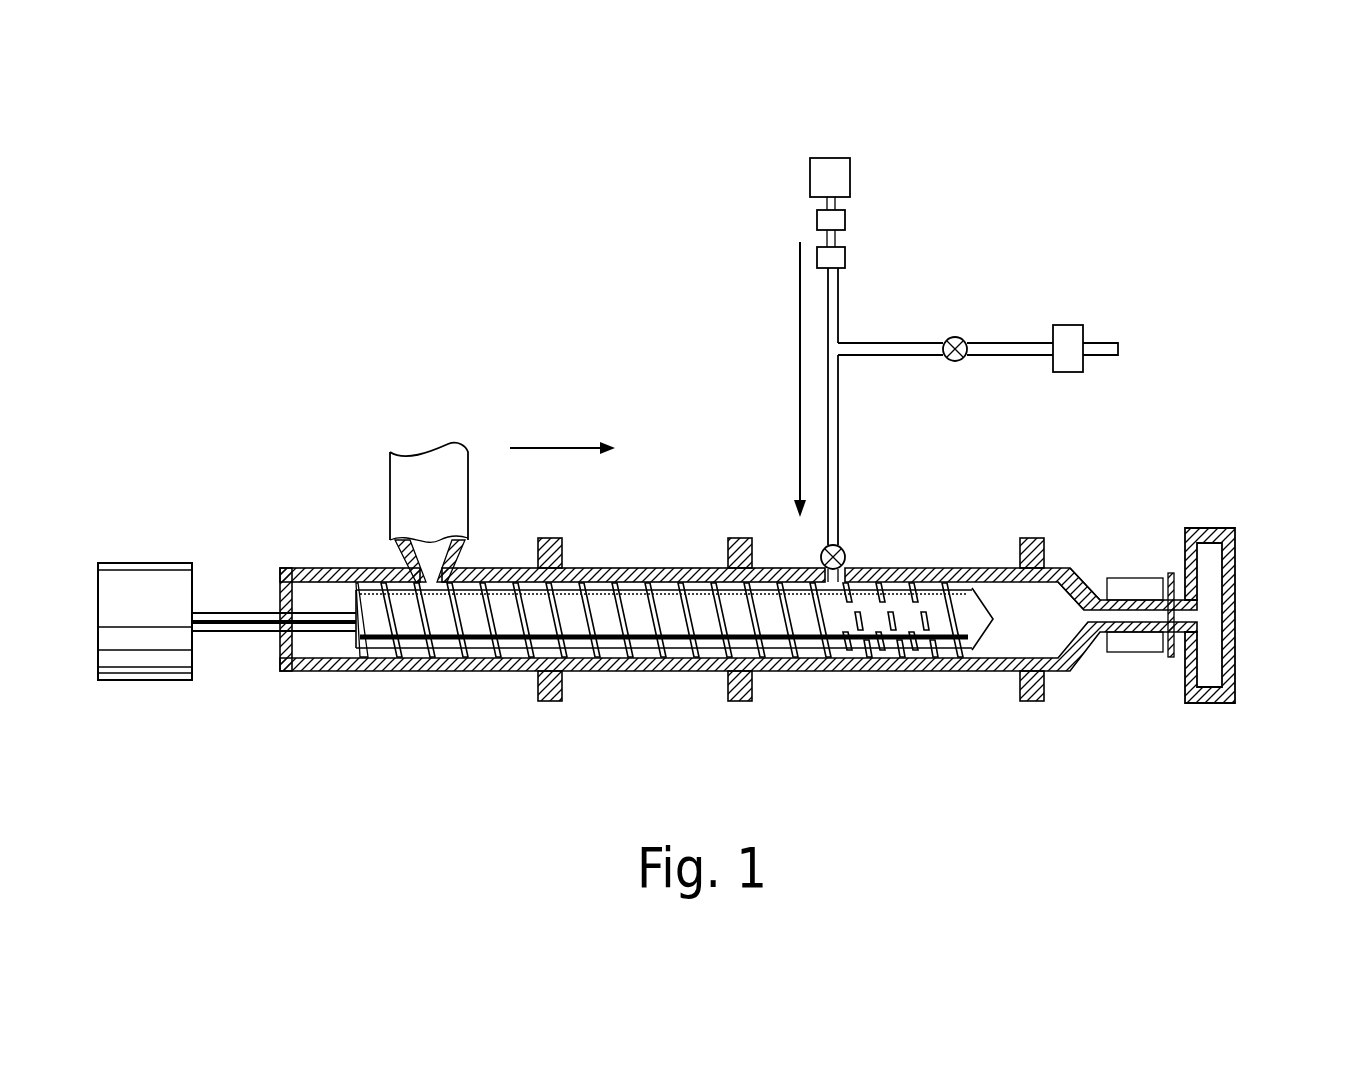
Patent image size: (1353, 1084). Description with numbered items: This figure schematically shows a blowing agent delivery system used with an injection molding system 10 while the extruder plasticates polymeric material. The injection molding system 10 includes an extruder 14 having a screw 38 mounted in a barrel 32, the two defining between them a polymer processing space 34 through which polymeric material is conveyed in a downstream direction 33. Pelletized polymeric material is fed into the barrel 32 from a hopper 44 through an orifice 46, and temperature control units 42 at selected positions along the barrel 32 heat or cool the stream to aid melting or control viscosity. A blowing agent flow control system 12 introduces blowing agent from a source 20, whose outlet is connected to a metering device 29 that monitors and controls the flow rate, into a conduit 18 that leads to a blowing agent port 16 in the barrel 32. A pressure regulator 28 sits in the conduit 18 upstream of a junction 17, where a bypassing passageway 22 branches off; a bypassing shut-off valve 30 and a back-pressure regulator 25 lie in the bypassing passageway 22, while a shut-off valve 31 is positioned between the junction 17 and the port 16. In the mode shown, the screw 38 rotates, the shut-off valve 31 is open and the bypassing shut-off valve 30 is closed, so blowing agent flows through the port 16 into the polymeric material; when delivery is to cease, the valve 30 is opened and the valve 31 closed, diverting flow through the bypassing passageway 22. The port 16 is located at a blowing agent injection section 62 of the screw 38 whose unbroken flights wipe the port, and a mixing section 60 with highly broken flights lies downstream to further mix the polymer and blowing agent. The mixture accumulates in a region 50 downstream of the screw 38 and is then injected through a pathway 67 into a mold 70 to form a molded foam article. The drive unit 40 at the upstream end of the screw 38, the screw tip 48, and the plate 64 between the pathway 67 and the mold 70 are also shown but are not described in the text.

The injection molding system 10 is at (505, 348).
The blowing agent flow control system 12 is at (894, 124).
The extruder 14 is at (325, 722).
The blowing agent port 16 is at (845, 572).
The junction 17 is at (850, 376).
The conduit 18 is at (838, 290).
The source 20 is at (808, 182).
The bypassing passageway 22 is at (997, 357).
The back-pressure regulator 25 is at (1063, 325).
The pressure regulator 28 is at (847, 257).
The metering device 29 is at (815, 217).
The bypassing shut-off valve 30 is at (952, 337).
The shut-off valve 31 is at (845, 552).
The barrel 32 is at (415, 672).
The downstream direction 33 is at (563, 448).
The polymer processing space 34 is at (492, 672).
The screw 38 is at (680, 600).
The motor 40 is at (133, 563).
The temperature control units 42 is at (547, 537).
The hopper 44 is at (420, 462).
The orifice 46 is at (430, 562).
The screw tip 48 is at (996, 619).
The region 50 is at (1056, 580).
The mixing section 60 is at (822, 674).
The blowing agent injection section 62 is at (816, 668).
The breaker plate 64 is at (1170, 575).
The pathway 67 is at (1132, 613).
The mold 70 is at (1187, 615).